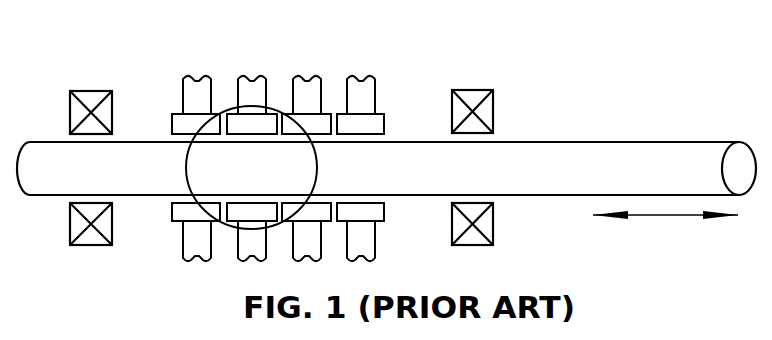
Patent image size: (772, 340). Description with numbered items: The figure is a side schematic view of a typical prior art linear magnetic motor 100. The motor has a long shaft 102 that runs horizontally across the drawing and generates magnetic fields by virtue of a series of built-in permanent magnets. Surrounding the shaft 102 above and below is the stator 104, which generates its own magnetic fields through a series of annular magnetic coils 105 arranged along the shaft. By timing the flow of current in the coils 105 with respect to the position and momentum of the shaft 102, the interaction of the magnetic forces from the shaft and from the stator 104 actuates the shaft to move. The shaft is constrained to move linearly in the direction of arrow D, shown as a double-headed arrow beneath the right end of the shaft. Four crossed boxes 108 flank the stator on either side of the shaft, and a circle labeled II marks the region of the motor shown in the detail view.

The linear magnetic motor 100 is at (652, 76).
The shaft 102 is at (542, 142).
The stator 104 is at (385, 37).
The annular magnetic coils 105 is at (199, 76).
The sensor / coil units 108 is at (92, 90).
The section reference circle for FIG. 2 II is at (317, 166).
The arrow D is at (665, 226).